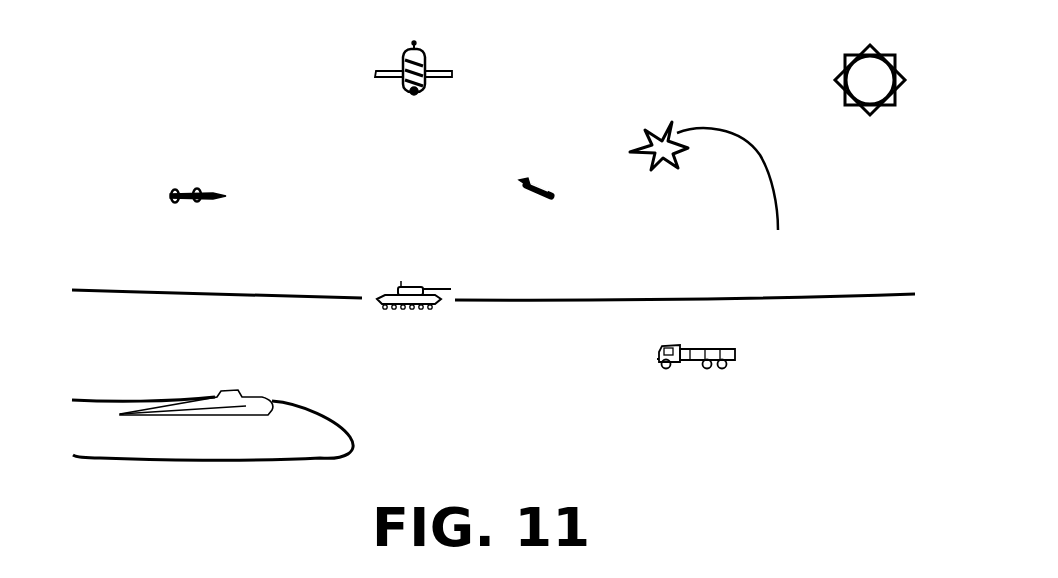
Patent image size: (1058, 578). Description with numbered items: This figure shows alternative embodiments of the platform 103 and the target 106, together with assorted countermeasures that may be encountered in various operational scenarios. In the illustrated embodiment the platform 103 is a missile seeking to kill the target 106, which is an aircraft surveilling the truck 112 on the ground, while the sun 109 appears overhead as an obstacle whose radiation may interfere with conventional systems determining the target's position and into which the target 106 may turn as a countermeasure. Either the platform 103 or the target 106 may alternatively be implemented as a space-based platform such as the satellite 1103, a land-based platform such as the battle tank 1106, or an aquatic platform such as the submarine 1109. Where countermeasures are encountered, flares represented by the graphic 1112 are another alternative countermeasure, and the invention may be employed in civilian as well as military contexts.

The platform 103 is at (198, 184).
The target 106 is at (545, 186).
The sun 109 is at (842, 95).
The truck 112 is at (727, 352).
The satellite 1103 is at (405, 52).
The battle tank 1106 is at (378, 296).
The submarine 1109 is at (270, 403).
The graphic 1112 is at (650, 135).